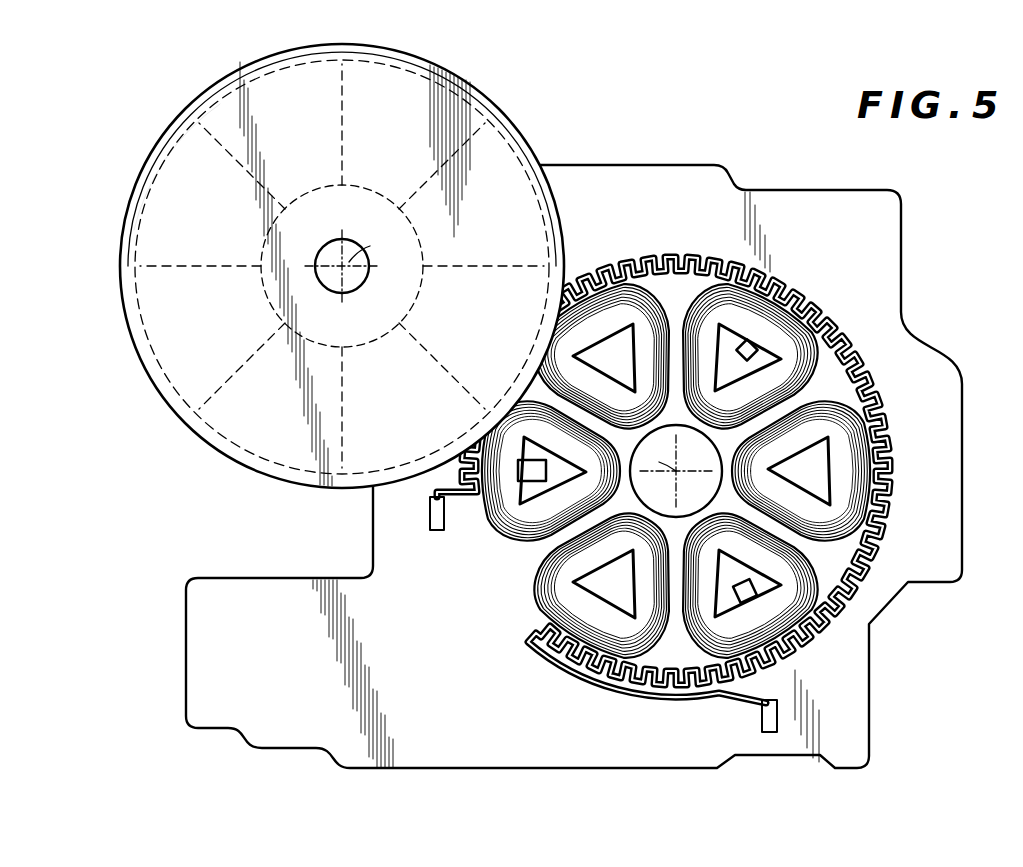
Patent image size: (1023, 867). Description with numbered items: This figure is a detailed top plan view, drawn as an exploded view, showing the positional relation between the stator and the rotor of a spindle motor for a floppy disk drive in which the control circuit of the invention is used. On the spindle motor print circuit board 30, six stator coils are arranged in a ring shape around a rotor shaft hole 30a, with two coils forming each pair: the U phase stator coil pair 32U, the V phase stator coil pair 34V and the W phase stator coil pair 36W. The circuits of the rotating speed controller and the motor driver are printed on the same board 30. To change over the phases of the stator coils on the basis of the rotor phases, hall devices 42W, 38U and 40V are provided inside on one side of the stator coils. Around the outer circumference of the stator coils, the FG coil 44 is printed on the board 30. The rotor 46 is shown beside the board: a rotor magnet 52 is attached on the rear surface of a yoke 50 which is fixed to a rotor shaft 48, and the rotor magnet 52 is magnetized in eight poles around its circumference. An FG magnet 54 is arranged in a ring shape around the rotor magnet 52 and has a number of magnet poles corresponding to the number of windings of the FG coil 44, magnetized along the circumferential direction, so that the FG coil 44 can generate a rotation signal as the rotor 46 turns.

The spindle motor print circuit board 30 is at (884, 310).
The rotor shaft hole 30a is at (716, 464).
The U phase stator coil pair 32U is at (848, 465).
The V phase stator coil pair 34V is at (766, 312).
The W phase stator coil pair 36W is at (596, 318).
The hall device 38U is at (740, 346).
The hall device 40V is at (750, 600).
The hall device 42W is at (531, 483).
The FG coil 44 is at (876, 536).
The rotor 46 is at (548, 94).
The rotor shaft 48 is at (348, 292).
The yoke 50 is at (180, 205).
The rotor magnet 52 is at (214, 103).
The FG magnet 54 is at (203, 103).